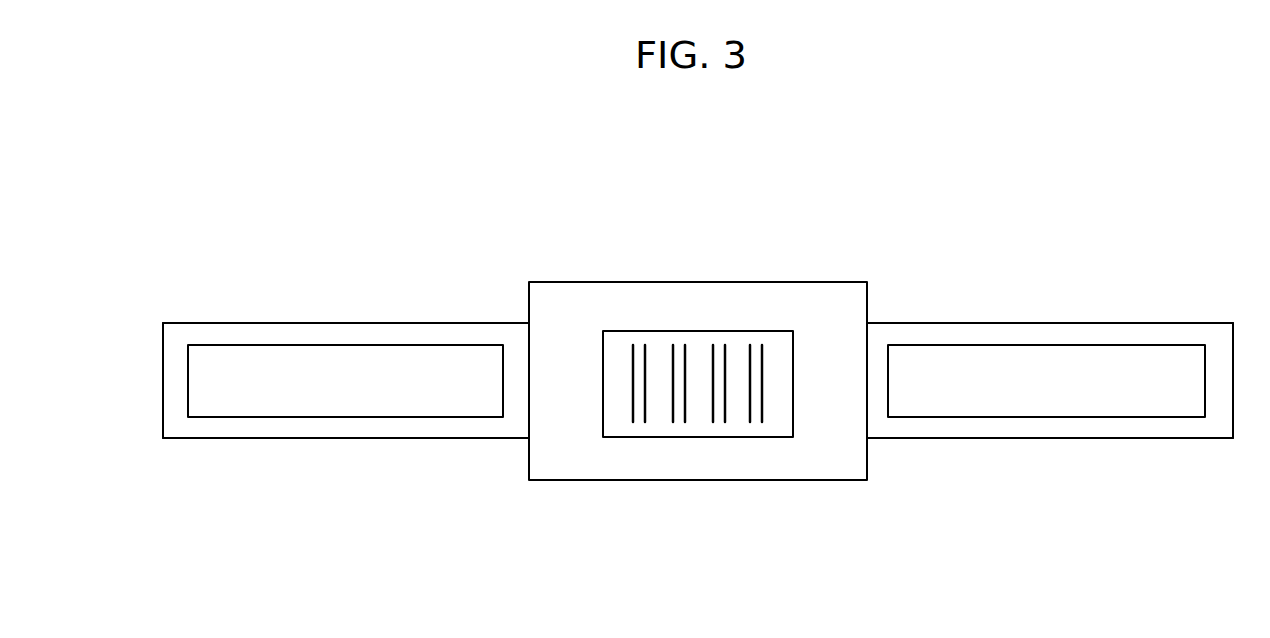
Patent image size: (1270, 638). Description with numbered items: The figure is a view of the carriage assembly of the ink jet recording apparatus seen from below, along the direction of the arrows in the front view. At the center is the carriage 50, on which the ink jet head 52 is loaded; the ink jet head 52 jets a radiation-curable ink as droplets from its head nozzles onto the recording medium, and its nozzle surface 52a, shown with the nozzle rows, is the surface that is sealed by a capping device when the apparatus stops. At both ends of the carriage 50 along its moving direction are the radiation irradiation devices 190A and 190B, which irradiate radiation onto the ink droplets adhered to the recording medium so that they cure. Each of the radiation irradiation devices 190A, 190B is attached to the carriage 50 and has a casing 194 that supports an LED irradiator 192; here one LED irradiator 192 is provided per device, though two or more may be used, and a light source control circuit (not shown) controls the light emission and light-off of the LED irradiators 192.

The carriage 50 is at (798, 465).
The ink jet head 52 is at (717, 439).
The nozzle surface 52a is at (700, 343).
The radiation irradiation device 190A is at (463, 313).
The radiation irradiation device 190B is at (930, 313).
The LED irradiator 192 is at (473, 403).
The casing 194 is at (163, 410).